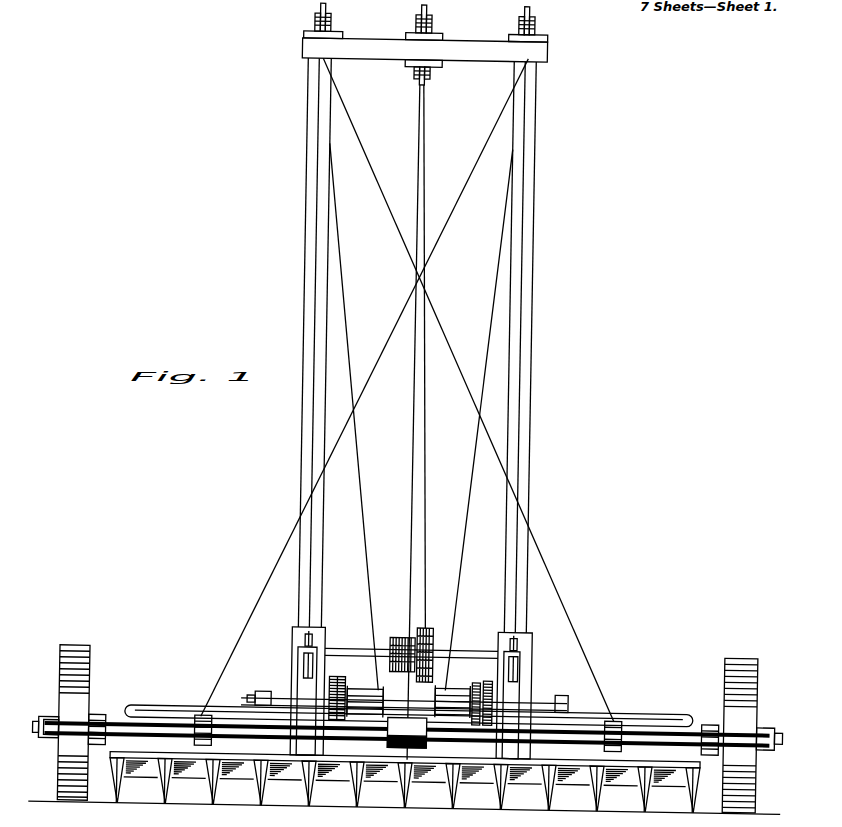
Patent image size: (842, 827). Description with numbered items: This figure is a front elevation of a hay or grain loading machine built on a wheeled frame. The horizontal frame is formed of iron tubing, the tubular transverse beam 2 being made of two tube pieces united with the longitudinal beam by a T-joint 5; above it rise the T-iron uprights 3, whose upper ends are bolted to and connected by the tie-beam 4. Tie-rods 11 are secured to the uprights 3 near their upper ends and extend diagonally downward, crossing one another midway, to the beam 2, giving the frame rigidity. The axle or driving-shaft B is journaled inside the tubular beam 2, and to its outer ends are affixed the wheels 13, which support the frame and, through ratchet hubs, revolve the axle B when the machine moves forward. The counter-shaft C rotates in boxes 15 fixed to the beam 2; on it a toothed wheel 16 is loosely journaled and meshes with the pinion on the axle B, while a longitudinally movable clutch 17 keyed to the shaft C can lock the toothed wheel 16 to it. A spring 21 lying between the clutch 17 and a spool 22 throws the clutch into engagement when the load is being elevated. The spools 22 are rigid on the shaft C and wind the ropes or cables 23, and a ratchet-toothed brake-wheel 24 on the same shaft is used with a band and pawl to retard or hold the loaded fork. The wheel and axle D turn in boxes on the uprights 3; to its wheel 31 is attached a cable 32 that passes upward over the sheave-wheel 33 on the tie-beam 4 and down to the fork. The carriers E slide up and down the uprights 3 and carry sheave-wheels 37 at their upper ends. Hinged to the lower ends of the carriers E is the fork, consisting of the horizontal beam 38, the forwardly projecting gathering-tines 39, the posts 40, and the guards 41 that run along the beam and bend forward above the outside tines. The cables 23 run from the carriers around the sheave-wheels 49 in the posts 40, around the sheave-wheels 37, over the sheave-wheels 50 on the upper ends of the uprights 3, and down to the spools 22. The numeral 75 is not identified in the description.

The transverse beam 2 is at (150, 757).
The uprights 3 is at (302, 224).
The tie-beam 4 is at (377, 41).
The T-joint 5 is at (406, 724).
The tie-rods 11 is at (413, 388).
The wheels 13 is at (420, 719).
The boxes 15 is at (560, 696).
The toothed wheel 16 is at (492, 680).
The clutch 17 is at (481, 682).
The spring 21 is at (462, 722).
The spools 22 is at (409, 695).
The ropes or cables 23 is at (313, 321).
The brake-wheel 24 is at (342, 678).
The wheel 31 is at (428, 628).
The cable 32 is at (432, 541).
The sheave-wheel 33 is at (410, 84).
The sheave-wheels 37 is at (309, 642).
The horizontal beam 38 is at (404, 785).
The gathering-tines 39 is at (404, 792).
The posts 40 is at (524, 680).
The guards 41 is at (409, 707).
The sheave-wheels 49 is at (308, 668).
The sheave-wheels 50 is at (325, 20).
The bearing block 75 is at (259, 690).
The axle or driving-shaft B is at (44, 734).
The counter-shaft C is at (404, 694).
The wheel and axle D is at (408, 638).
The carriers E is at (296, 655).